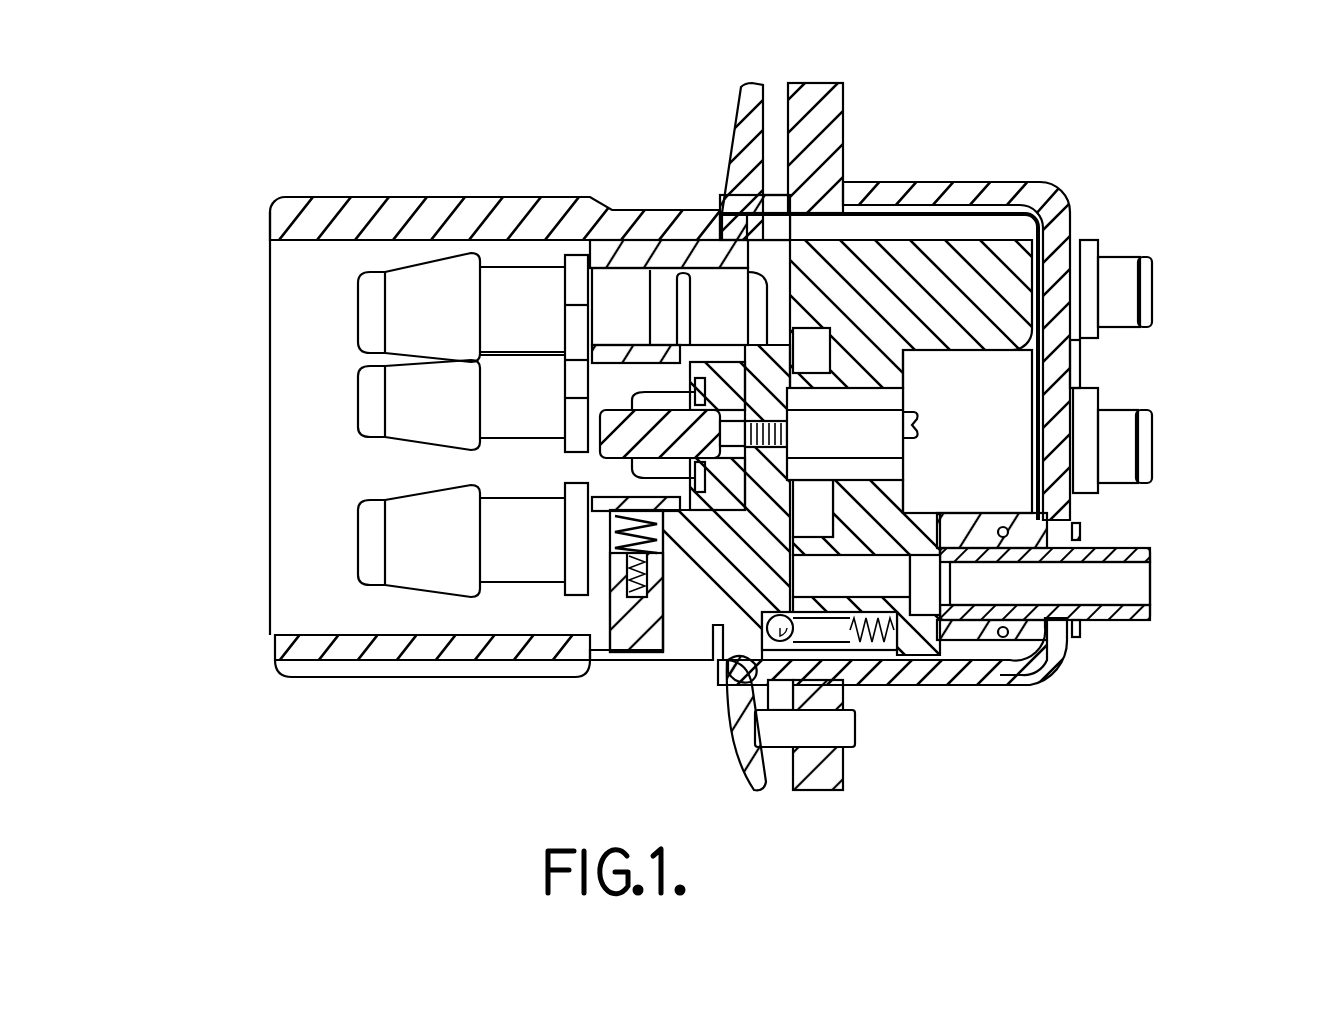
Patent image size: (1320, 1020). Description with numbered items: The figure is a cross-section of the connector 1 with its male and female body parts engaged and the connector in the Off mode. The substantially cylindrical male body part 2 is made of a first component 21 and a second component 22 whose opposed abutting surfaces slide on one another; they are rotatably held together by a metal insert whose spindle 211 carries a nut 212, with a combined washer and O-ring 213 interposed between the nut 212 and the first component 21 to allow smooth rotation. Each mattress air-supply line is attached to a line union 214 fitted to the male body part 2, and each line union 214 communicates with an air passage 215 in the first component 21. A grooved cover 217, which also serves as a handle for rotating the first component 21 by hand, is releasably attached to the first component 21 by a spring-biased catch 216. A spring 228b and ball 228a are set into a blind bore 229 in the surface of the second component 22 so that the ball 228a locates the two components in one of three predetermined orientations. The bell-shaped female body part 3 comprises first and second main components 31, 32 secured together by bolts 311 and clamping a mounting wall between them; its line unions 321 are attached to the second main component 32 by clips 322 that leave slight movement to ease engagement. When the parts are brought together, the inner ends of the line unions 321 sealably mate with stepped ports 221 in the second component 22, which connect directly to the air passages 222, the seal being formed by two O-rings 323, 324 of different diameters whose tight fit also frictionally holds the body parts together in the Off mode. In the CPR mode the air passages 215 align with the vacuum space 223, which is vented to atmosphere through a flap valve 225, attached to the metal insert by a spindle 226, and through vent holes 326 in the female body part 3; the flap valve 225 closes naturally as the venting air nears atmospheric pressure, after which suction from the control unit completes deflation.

The connector 1 is at (1230, 82).
The male body part 2 is at (320, 190).
The female body part 3 is at (997, 165).
The first component 21 is at (718, 640).
The second component 22 is at (1022, 248).
The first main component 31 is at (765, 88).
The second main component 32 is at (823, 773).
The spindle 211 is at (605, 443).
The nut 212 is at (657, 395).
The combined washer and O-ring 213 is at (672, 340).
The line union 214 is at (365, 298).
The air passage 215 is at (717, 290).
The spring-biased catch 216 is at (640, 655).
The grooved cover 217 is at (272, 650).
The port 221 is at (970, 620).
The air passage 222 is at (950, 660).
The vacuum space 223 is at (807, 347).
The flap valve 225 is at (905, 465).
The spindle 226 is at (917, 420).
The ball 228a is at (737, 665).
The spring 228b is at (882, 660).
The blind bore 229 is at (895, 655).
The bolt 311 is at (745, 735).
The line union 321 is at (1152, 260).
The clip 322 is at (1082, 623).
The O-ring 323 is at (1040, 685).
The O-ring 324 is at (968, 632).
The vent hole 326 is at (1073, 350).